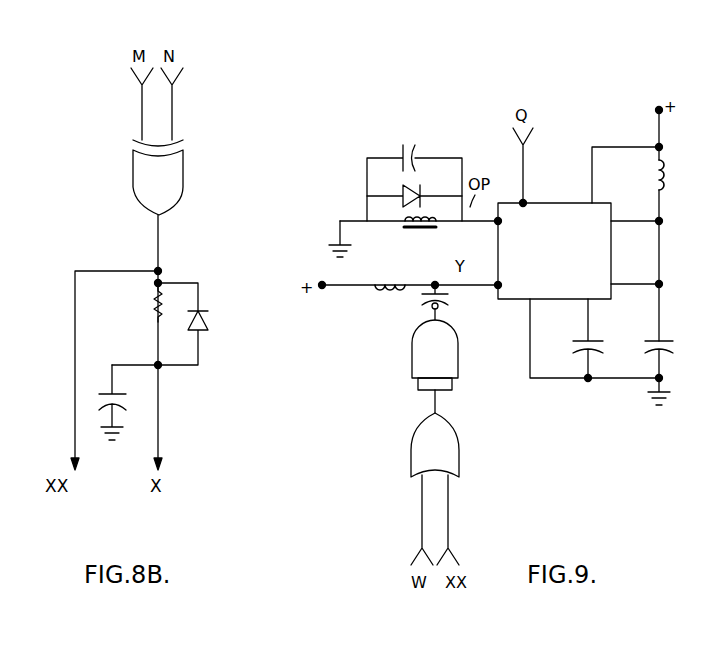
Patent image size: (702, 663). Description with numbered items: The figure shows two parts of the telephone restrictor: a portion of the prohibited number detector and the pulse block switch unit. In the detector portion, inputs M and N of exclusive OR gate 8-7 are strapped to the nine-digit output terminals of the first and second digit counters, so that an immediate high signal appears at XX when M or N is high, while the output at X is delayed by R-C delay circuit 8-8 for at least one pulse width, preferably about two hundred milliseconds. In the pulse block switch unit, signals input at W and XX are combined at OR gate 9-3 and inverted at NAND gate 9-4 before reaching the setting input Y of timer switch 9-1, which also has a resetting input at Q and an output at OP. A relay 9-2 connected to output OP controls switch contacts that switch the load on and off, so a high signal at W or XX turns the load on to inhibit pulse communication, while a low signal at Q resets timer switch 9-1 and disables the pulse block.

In FIG. 8B, the exclusive OR gate 8-7 is at (176, 188).
In FIG. 8B, the R-C delay circuit 8-8 is at (154, 362).
In FIG. 9, the timer switch 9-1 is at (545, 204).
In FIG. 9, the relay 9-2 is at (405, 226).
In FIG. 9, the OR gate 9-3 is at (412, 460).
In FIG. 9, the NAND gate 9-4 is at (415, 352).